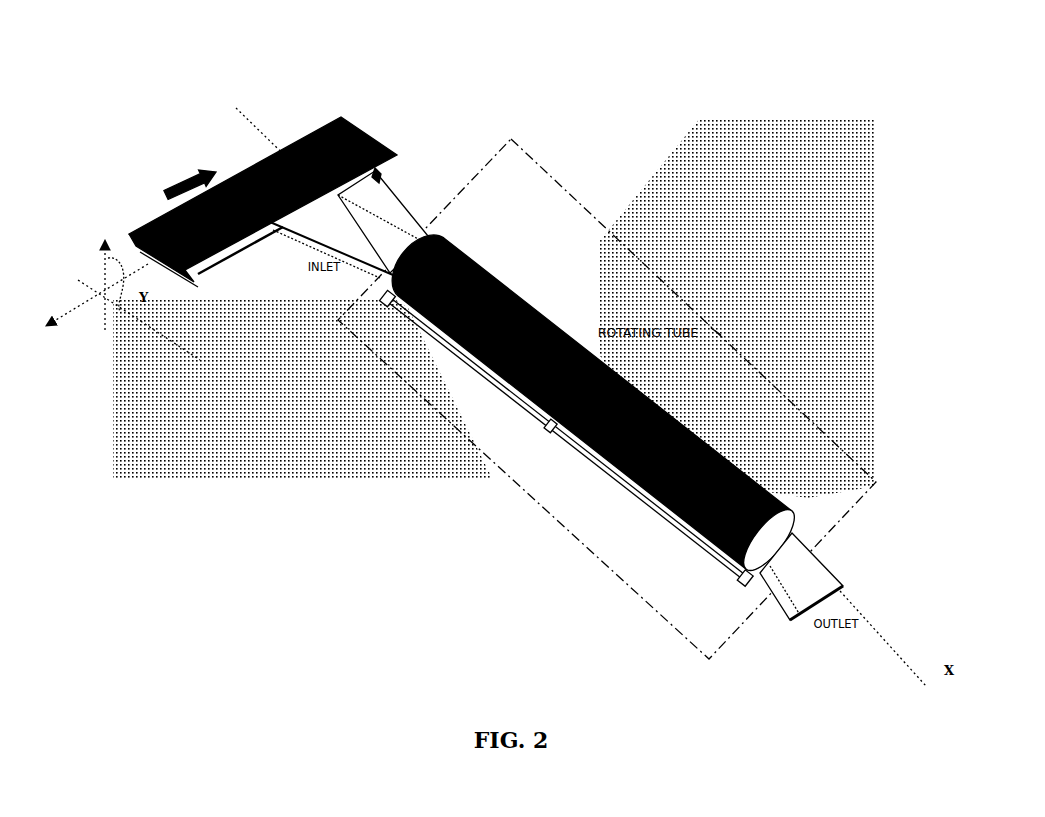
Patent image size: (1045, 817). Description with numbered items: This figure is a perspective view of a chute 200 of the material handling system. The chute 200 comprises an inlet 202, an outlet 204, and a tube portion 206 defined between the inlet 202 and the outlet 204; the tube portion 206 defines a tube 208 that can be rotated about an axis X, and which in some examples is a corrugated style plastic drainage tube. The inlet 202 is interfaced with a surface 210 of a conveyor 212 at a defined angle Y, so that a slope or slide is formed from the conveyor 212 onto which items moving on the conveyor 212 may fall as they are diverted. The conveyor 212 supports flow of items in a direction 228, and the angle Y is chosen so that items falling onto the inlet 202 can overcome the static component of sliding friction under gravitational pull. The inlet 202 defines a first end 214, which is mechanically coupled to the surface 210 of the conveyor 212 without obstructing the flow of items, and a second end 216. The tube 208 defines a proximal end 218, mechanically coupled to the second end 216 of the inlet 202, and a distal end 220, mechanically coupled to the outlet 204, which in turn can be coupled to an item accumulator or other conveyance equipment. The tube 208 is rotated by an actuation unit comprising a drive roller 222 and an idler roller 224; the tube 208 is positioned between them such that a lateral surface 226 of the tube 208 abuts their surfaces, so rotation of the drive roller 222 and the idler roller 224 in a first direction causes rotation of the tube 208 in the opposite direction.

The chute 200 is at (183, 68).
The inlet 202 is at (278, 197).
The outlet 204 is at (783, 603).
The tube portion 206 is at (735, 343).
The tube 208 is at (618, 370).
The surface of the conveyor 210 is at (372, 168).
The conveyor 212 is at (286, 254).
The first end of the inlet 214 is at (293, 213).
The second end of the inlet 216 is at (372, 272).
The proximal end of the tube 218 is at (437, 232).
The distal end of the tube 220 is at (781, 503).
The drive roller 222 is at (577, 447).
The idler roller 224 is at (695, 432).
The lateral surface of the tube 226 is at (662, 500).
The direction of item flow 228 is at (184, 176).